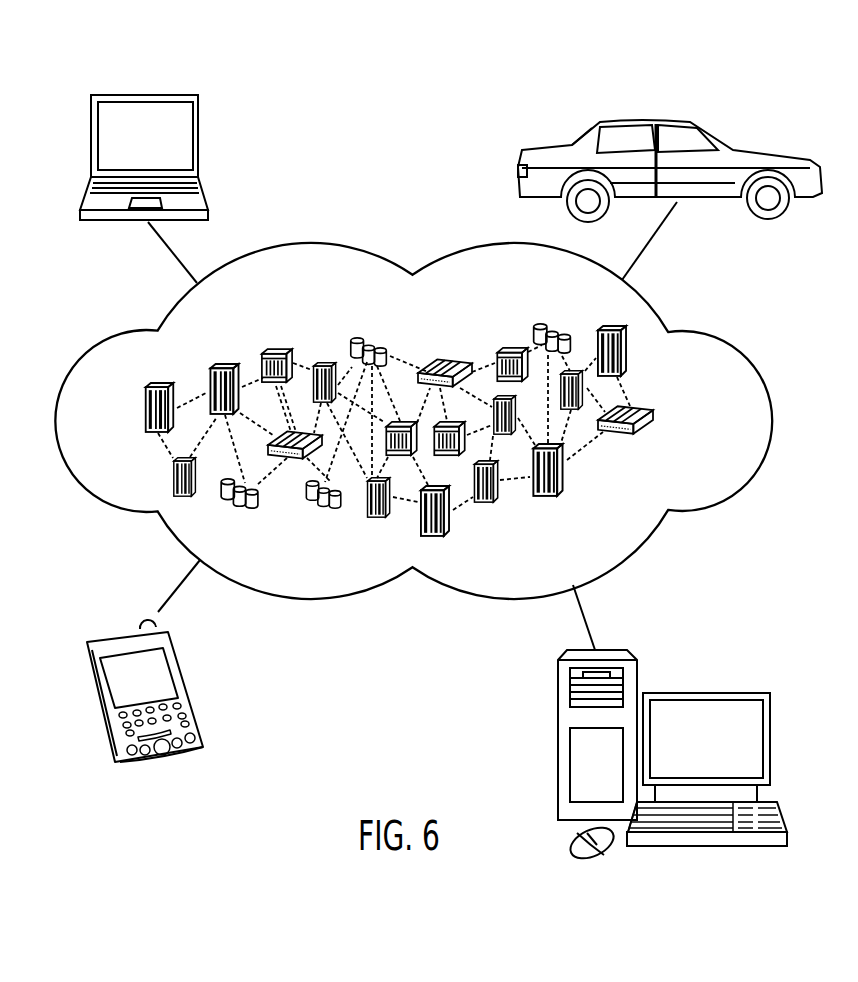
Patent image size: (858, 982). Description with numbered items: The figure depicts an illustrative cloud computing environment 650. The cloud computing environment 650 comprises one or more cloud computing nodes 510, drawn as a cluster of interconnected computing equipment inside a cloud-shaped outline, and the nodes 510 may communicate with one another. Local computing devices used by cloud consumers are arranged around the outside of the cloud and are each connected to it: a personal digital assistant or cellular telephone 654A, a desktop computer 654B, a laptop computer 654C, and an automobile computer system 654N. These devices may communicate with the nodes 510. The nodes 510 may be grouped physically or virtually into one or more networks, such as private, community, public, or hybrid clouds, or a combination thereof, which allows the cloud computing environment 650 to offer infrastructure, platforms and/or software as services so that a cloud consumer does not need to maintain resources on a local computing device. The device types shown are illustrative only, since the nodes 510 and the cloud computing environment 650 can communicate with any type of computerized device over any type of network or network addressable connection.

The cloud computing node 510 is at (668, 424).
The cloud computing environment 650 is at (718, 335).
The personal digital assistant (PDA) or cellular telephone 654A is at (127, 635).
The desktop computer 654B is at (705, 692).
The laptop computer 654C is at (143, 92).
The automobile computer system 654N is at (653, 120).